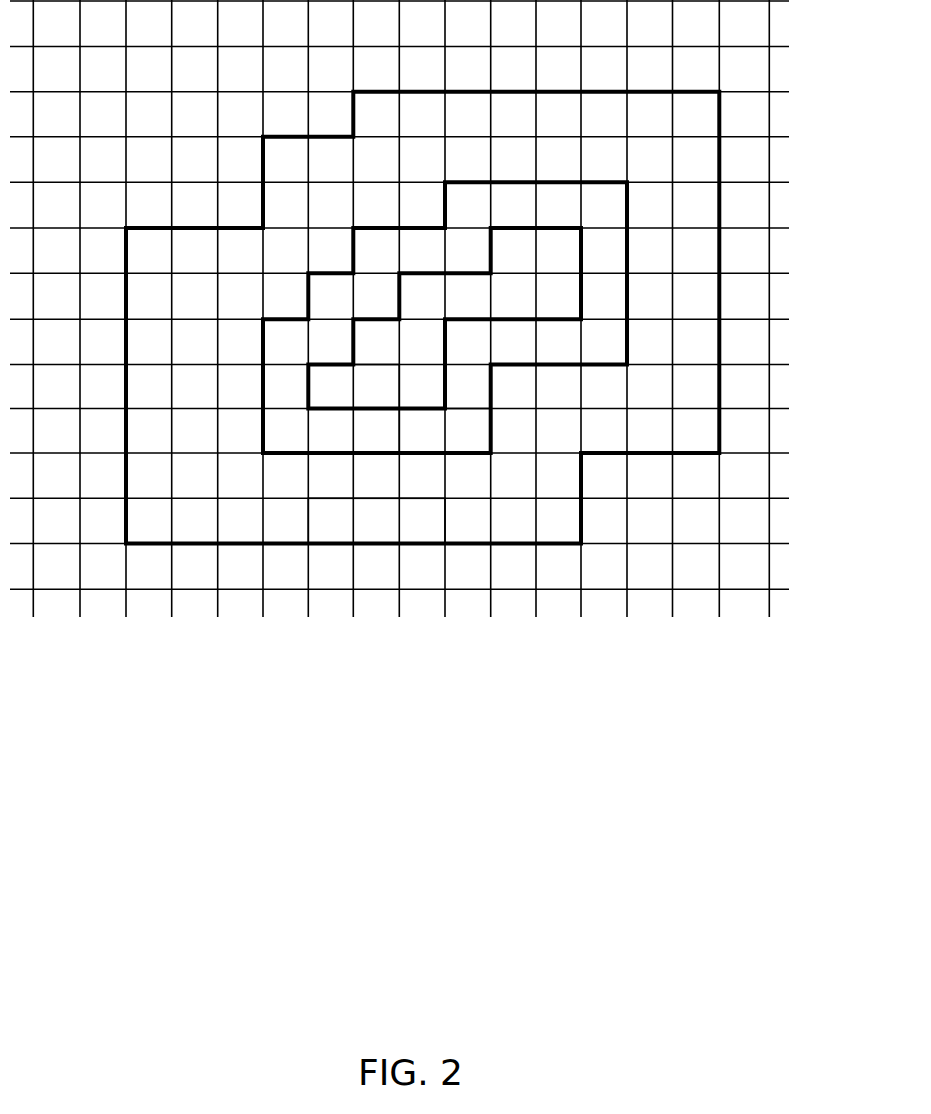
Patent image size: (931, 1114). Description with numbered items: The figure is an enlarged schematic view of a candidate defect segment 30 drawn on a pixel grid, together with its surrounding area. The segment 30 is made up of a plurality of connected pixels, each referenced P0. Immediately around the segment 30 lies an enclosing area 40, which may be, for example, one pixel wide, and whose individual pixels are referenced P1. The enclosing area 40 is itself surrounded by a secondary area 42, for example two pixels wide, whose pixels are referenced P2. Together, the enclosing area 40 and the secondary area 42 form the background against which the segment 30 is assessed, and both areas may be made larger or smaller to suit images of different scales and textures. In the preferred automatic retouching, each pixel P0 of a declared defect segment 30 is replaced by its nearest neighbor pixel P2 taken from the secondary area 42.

The candidate defect segment 30 is at (567, 252).
The enclosing area 40 is at (610, 329).
The secondary area 42 is at (664, 423).
The pixel of candidate defect segment P0 is at (367, 385).
The pixel of enclosing area P1 is at (470, 435).
The pixel of secondary area P2 is at (418, 521).